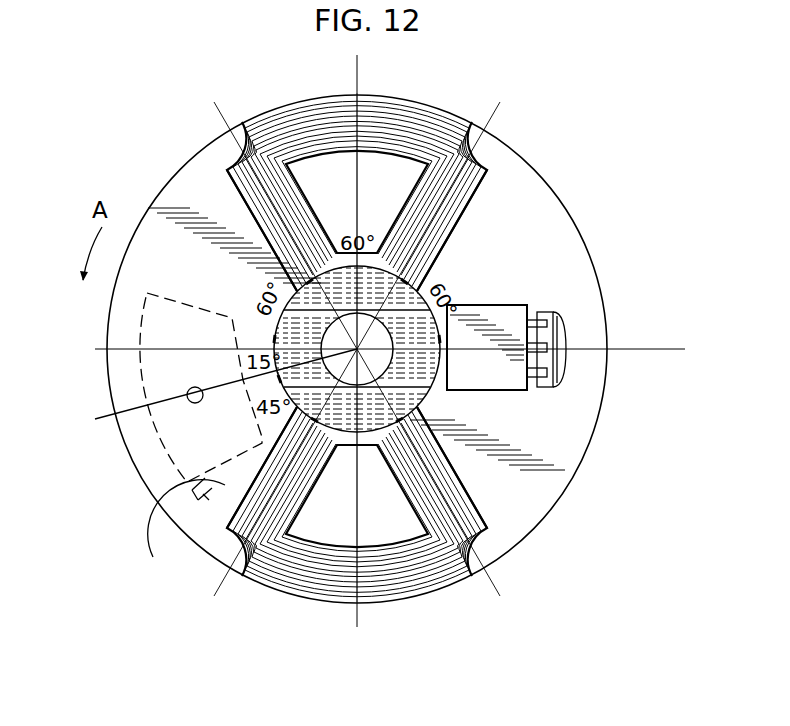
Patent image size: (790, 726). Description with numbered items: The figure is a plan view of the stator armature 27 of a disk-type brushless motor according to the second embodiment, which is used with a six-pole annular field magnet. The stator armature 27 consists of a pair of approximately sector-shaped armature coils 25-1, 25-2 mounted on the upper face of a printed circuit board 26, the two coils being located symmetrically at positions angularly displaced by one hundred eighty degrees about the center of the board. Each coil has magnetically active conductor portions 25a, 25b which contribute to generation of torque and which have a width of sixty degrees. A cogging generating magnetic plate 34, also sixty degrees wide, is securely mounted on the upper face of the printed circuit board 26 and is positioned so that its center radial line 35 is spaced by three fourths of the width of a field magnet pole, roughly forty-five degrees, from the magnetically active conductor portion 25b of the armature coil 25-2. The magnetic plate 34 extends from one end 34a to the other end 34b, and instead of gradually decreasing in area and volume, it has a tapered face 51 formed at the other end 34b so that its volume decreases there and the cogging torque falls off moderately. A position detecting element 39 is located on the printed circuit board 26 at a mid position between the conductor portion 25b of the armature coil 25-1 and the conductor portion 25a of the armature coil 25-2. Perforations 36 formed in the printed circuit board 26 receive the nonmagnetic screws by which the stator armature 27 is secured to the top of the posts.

The armature coil 25-1 is at (420, 118).
The armature coil 25-2 is at (483, 530).
The magnetically active conductor portion 25a is at (243, 200).
The magnetically active conductor portion 25b is at (455, 220).
The printed circuit board 26 is at (583, 413).
The stator armature 27 is at (532, 150).
The cogging generating magnetic plate 34 is at (173, 447).
The one end of the magnetic plate 34a is at (198, 302).
The other end of the magnetic plate 34b is at (168, 485).
The center radial line 35 is at (203, 384).
The perforation 36 is at (191, 402).
The position detecting element 39 is at (507, 315).
The tapered face 51 is at (198, 500).